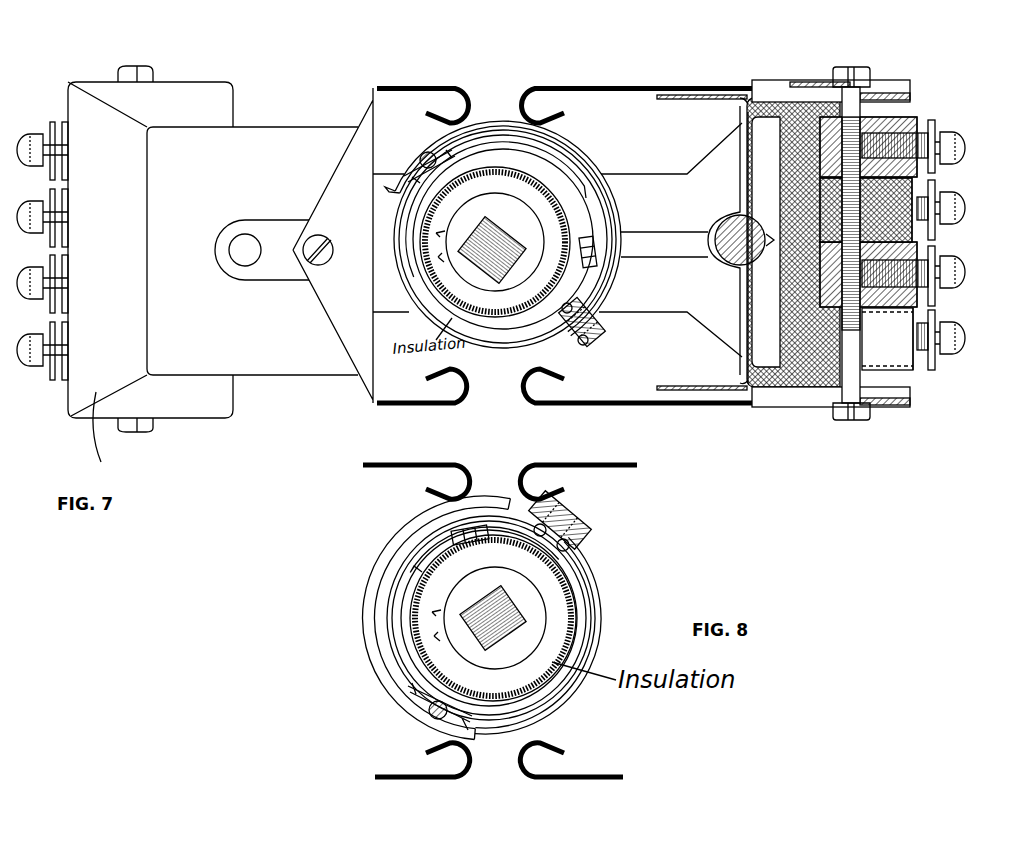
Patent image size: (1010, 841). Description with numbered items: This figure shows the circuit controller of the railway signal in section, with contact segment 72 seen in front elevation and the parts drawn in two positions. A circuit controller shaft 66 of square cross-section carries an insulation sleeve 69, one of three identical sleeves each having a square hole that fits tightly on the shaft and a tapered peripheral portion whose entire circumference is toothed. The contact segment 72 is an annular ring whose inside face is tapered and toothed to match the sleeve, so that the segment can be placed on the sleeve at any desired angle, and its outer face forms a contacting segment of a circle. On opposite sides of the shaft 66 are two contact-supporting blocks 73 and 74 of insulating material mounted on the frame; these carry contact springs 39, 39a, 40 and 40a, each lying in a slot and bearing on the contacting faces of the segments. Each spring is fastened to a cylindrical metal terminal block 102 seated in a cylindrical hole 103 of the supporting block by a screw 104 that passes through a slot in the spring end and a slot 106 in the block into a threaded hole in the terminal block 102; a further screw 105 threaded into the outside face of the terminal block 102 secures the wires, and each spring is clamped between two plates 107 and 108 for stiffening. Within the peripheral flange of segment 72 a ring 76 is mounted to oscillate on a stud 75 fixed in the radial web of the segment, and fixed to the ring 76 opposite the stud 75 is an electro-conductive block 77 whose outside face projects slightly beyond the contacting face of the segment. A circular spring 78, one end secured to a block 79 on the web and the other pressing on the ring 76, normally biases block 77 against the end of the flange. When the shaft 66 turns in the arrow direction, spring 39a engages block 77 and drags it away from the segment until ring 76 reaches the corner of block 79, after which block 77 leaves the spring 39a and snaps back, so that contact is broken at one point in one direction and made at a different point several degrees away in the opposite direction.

In FIG. 7, the contact spring 39 is at (428, 87).
In FIG. 8, the contact spring 39 is at (410, 460).
In FIG. 7, the contact spring 39a is at (632, 80).
In FIG. 8, the contact spring 39a is at (590, 450).
In FIG. 7, the contact spring 40 is at (441, 405).
In FIG. 8, the contact spring 40 is at (385, 778).
In FIG. 7, the contact spring 40a is at (646, 405).
In FIG. 8, the contact spring 40a is at (608, 778).
In FIG. 7, the circuit controller shaft 66 is at (507, 266).
In FIG. 8, the circuit controller shaft 66 is at (518, 630).
In FIG. 7, the insulation sleeve 69 is at (505, 232).
In FIG. 8, the insulation sleeve 69 is at (508, 604).
In FIG. 7, the contact segment 72 is at (498, 120).
In FIG. 8, the contact segment 72 is at (368, 628).
In FIG. 7, the contact-supporting block 73 is at (78, 387).
In FIG. 7, the contact-supporting block 74 is at (810, 385).
In FIG. 7, the stud 75 is at (424, 153).
In FIG. 8, the stud 75 is at (428, 714).
In FIG. 7, the ring 76 is at (398, 211).
In FIG. 8, the ring 76 is at (540, 706).
In FIG. 7, the block 77 is at (596, 330).
In FIG. 8, the block 77 is at (580, 516).
In FIG. 7, the circular spring 78 is at (560, 172).
In FIG. 8, the circular spring 78 is at (408, 586).
In FIG. 7, the block 79 is at (589, 238).
In FIG. 8, the block 79 is at (455, 540).
In FIG. 7, the terminal block 102 is at (924, 118).
In FIG. 7, the cylindrical hole 103 is at (882, 92).
In FIG. 7, the screw 104 is at (851, 67).
In FIG. 7, the screw 105 is at (942, 168).
In FIG. 7, the slot 106 is at (826, 86).
In FIG. 7, the plate 107 is at (808, 82).
In FIG. 7, the plate 108 is at (684, 100).